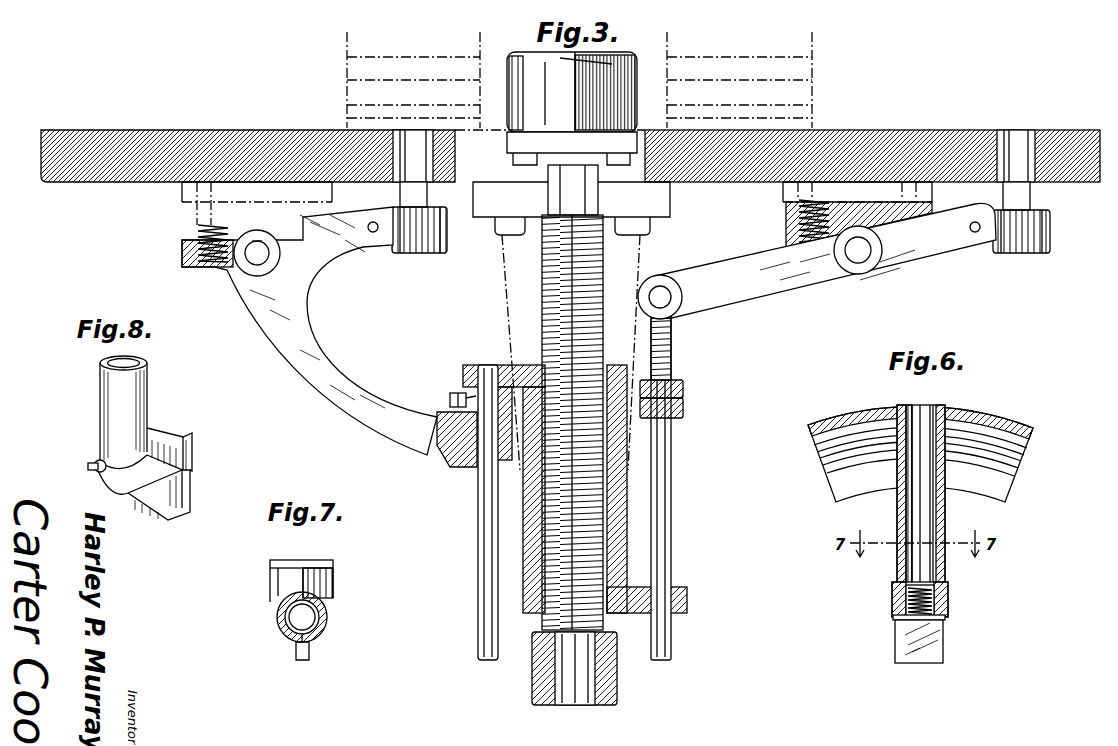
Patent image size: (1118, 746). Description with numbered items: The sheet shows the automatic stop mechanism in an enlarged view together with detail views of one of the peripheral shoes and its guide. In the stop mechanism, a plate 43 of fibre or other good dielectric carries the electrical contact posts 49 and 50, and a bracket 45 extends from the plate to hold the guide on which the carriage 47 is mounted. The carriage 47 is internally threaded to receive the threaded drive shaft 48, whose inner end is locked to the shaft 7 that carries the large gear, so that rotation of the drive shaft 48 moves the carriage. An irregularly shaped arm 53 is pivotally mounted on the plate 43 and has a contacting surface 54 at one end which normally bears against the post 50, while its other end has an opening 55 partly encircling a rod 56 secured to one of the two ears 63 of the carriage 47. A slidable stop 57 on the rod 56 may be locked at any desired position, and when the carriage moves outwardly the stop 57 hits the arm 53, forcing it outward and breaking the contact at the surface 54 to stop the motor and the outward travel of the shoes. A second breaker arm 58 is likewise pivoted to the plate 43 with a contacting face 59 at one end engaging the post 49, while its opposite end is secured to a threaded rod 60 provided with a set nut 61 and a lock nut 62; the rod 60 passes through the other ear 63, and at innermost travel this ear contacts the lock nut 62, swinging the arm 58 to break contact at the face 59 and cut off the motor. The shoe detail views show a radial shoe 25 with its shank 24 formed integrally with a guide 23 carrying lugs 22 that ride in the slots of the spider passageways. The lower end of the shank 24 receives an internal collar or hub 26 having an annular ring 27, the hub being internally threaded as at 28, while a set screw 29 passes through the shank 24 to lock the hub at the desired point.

In FIG. 3, the shaft 7 is at (612, 66).
In FIG. 3, the plate 43 is at (131, 182).
In FIG. 3, the bracket 45 is at (612, 702).
In FIG. 3, the carriage 47 is at (627, 558).
In FIG. 3, the threaded drive shaft 48 is at (548, 334).
In FIG. 3, the electrical contact post 49 is at (1026, 130).
In FIG. 3, the electrical contact post 50 is at (413, 128).
In FIG. 3, the arm 53 is at (342, 364).
In FIG. 3, the contacting surface 54 is at (440, 210).
In FIG. 3, the opening 55 is at (465, 468).
In FIG. 3, the rod 56 is at (478, 570).
In FIG. 3, the slidable stop 57 is at (452, 394).
In FIG. 3, the breaker arm 58 is at (765, 292).
In FIG. 3, the contacting face 59 is at (1050, 212).
In FIG. 3, the rod 60 is at (672, 492).
In FIG. 3, the set nut 61 is at (684, 389).
In FIG. 3, the lock nut 62 is at (684, 408).
In FIG. 3, the ears 63 is at (504, 365).
In FIG. 8, the lugs 22 is at (193, 452).
In FIG. 7, the lugs 22 is at (334, 564).
In FIG. 6, the lugs 22 is at (892, 598).
In FIG. 8, the guides 23 is at (192, 496).
In FIG. 7, the guides 23 is at (272, 586).
In FIG. 6, the guides 23 is at (897, 642).
In FIG. 8, the shank 24 is at (152, 400).
In FIG. 7, the shank 24 is at (328, 624).
In FIG. 6, the shank 24 is at (897, 506).
In FIG. 6, the radial shoes 25 is at (1022, 462).
In FIG. 6, the internal collar 26 is at (932, 590).
In FIG. 6, the annular ring 27 is at (946, 618).
In FIG. 6, the internal threads 28 is at (936, 604).
In FIG. 8, the set screw 29 is at (97, 474).